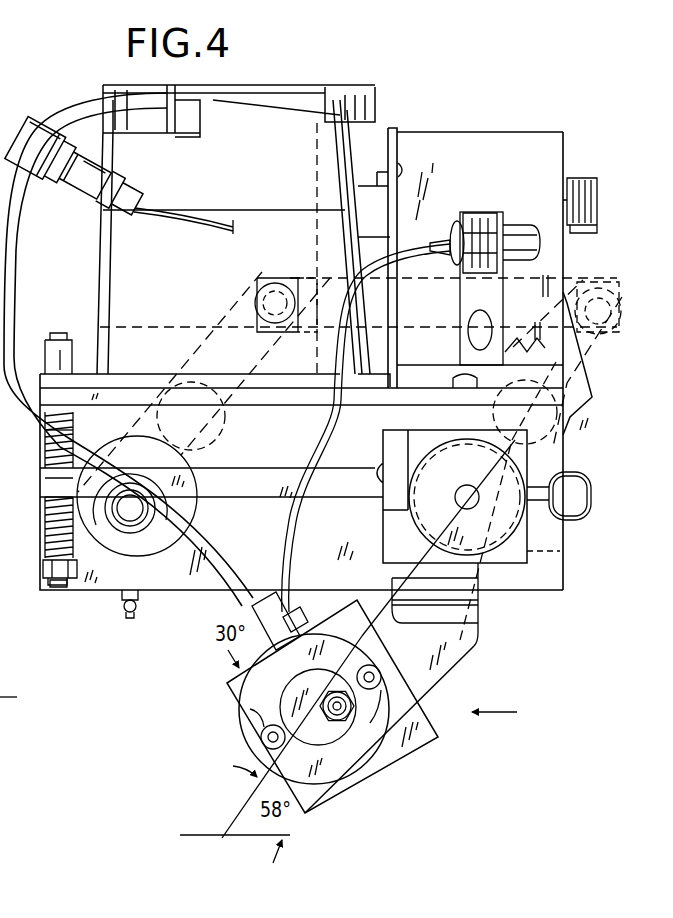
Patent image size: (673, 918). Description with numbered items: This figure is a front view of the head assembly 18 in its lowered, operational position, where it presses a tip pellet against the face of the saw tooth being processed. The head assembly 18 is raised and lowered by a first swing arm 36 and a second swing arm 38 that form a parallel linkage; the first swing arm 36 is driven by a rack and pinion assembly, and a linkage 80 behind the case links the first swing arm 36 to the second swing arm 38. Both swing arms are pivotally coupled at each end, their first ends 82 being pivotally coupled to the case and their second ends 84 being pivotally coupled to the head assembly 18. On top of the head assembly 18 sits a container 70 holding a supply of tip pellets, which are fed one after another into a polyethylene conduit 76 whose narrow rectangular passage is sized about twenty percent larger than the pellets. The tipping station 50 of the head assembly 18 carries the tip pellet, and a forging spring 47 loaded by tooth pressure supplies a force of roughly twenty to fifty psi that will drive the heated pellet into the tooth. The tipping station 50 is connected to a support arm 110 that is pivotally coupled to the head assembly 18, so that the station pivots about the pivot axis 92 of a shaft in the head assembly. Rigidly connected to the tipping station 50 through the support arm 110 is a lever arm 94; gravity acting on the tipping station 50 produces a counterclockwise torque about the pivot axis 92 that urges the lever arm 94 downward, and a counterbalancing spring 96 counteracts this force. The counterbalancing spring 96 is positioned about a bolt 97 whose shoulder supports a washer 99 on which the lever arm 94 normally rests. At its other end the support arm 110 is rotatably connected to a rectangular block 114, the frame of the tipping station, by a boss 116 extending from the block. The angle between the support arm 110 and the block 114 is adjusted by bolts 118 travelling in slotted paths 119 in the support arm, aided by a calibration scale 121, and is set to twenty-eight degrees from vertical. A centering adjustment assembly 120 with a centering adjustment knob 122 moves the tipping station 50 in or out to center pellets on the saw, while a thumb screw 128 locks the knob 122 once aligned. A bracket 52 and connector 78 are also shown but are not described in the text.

The head assembly 18 is at (617, 368).
The first swing arm 36 is at (580, 418).
The second swing arm 38 is at (233, 440).
The forging spring 47 is at (42, 450).
The tipping station 50 is at (294, 452).
The bracket 52 is at (43, 345).
The container 70 is at (277, 168).
The polyethylene conduit 76 is at (20, 230).
The connector 78 is at (44, 160).
The linkage 80 is at (330, 277).
The first ends 82 is at (174, 354).
The second ends 84 is at (150, 565).
The pivot axis 92 is at (476, 503).
The lever arm 94 is at (247, 497).
The counterbalancing spring 96 is at (43, 557).
The bolt 97 is at (44, 478).
The washer 99 is at (42, 497).
The support arm 110 is at (476, 650).
The rectangular block 114 is at (413, 750).
The boss 116 is at (345, 733).
The bolts 118 is at (261, 737).
The slotted paths 119 is at (250, 709).
The centering adjustment assembly 120 is at (606, 457).
The calibration scale 121 is at (280, 685).
The centering adjustment knob 122 is at (562, 552).
The thumb screw 128 is at (587, 495).